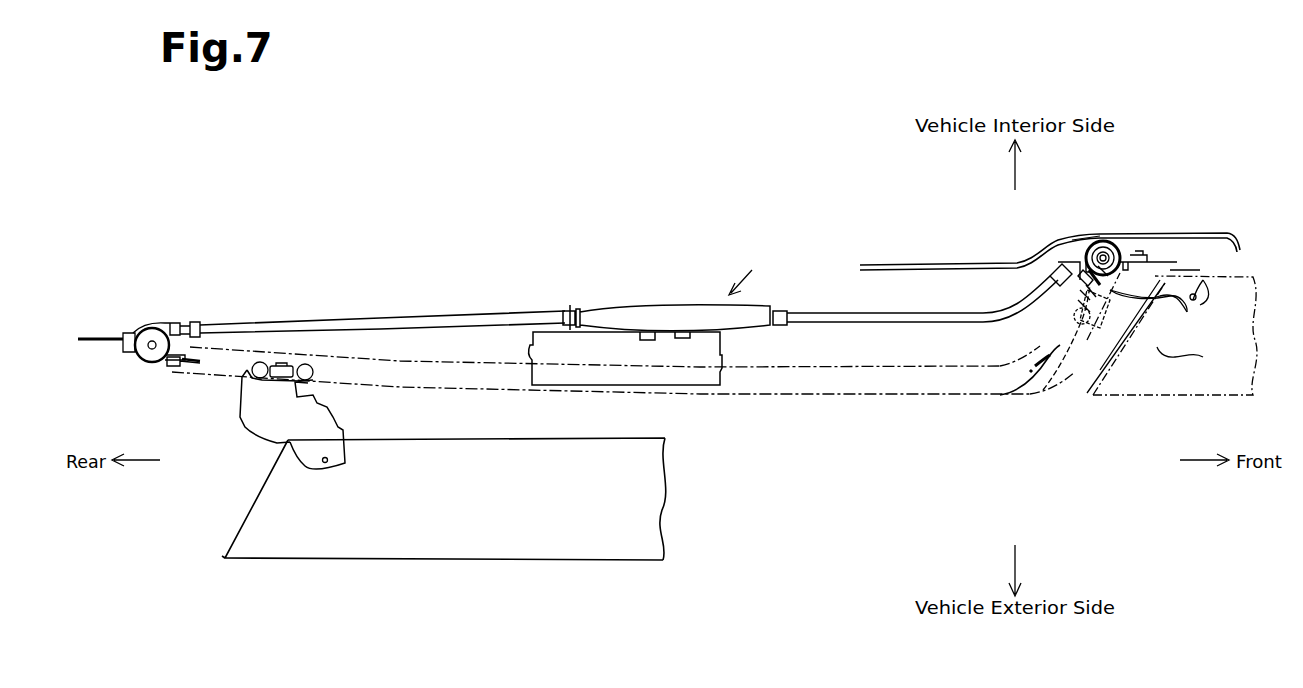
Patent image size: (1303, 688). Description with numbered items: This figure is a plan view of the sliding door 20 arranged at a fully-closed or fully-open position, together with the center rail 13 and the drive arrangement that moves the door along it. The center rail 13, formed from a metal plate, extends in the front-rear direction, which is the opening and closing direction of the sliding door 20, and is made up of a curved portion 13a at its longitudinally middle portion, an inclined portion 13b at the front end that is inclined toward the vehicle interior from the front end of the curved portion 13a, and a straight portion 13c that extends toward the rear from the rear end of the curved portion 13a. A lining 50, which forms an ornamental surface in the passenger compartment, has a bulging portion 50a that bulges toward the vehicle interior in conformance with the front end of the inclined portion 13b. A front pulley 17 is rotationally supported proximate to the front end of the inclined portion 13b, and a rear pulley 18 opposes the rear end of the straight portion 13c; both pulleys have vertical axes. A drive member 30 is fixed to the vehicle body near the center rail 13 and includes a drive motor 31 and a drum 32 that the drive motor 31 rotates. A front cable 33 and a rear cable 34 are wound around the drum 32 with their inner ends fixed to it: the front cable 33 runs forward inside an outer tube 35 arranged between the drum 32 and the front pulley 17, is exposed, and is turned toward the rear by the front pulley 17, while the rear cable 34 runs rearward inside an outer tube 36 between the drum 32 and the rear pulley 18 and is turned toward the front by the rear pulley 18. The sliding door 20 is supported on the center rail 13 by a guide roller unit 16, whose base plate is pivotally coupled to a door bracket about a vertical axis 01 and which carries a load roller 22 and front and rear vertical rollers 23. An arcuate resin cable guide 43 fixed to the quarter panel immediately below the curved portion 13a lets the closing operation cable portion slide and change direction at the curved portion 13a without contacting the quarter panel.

The axis 01 is at (328, 460).
The center rail 13 is at (920, 400).
The curved portion 13a is at (1037, 392).
The inclined portion 13b is at (1115, 350).
The straight portion 13c is at (542, 390).
The guide roller unit 16 is at (245, 430).
The front pulley 17 is at (1112, 250).
The rear pulley 18 is at (154, 326).
The sliding door 20 is at (480, 548).
The load roller 22 is at (283, 364).
The vertical rollers 23 is at (258, 360).
The drive member 30 is at (755, 278).
The drive motor 31 is at (535, 350).
The drum 32 is at (650, 303).
The front cable 33 is at (1181, 306).
The rear cable 34 is at (188, 367).
The outer tube 35 is at (877, 312).
The outer tube 36 is at (426, 316).
The cable guide 43 is at (1004, 396).
The lining 50 is at (918, 262).
The bulging portion 50a is at (1087, 234).